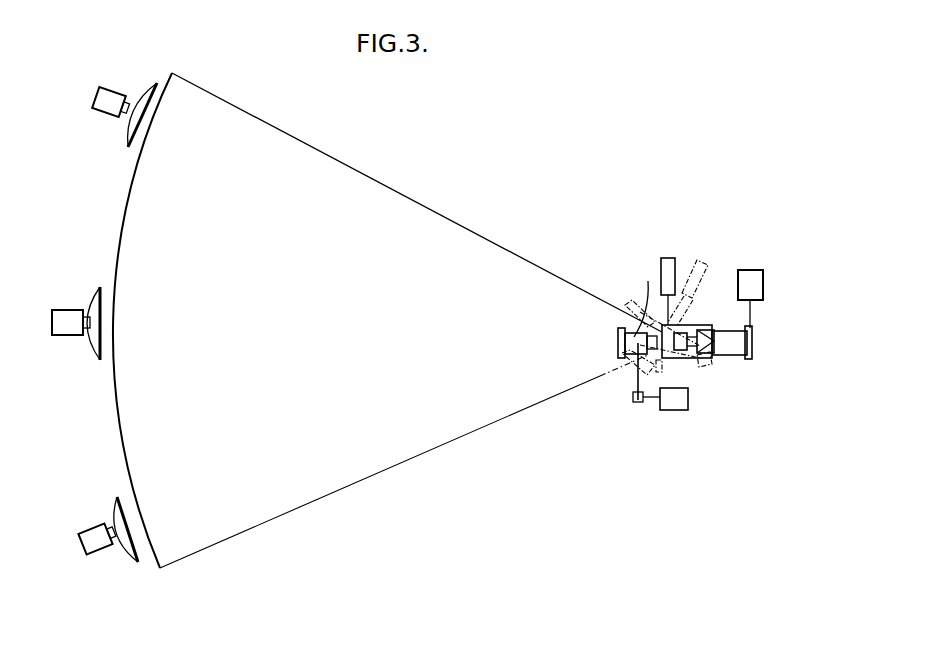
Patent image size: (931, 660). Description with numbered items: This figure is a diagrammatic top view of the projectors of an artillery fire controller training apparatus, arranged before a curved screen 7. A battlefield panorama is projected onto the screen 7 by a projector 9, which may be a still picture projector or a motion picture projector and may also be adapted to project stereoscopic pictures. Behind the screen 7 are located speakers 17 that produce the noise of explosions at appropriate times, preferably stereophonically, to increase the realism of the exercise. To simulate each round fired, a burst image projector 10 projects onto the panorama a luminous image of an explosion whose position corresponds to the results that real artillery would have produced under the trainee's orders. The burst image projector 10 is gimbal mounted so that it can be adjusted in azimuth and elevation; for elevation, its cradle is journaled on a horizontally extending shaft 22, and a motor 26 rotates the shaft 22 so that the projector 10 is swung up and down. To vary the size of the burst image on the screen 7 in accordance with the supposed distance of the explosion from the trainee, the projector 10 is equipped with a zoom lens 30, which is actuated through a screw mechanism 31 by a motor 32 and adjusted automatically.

The screen 7 is at (149, 156).
The speakers 17 is at (143, 100).
The motor 26 is at (750, 270).
The horizontally extending shaft 22 is at (750, 318).
The projector 9 is at (731, 365).
The burst image projector 10 is at (687, 370).
The screw mechanism 31 is at (648, 398).
The motor 32 is at (675, 410).
The zoom lens 30 is at (636, 303).